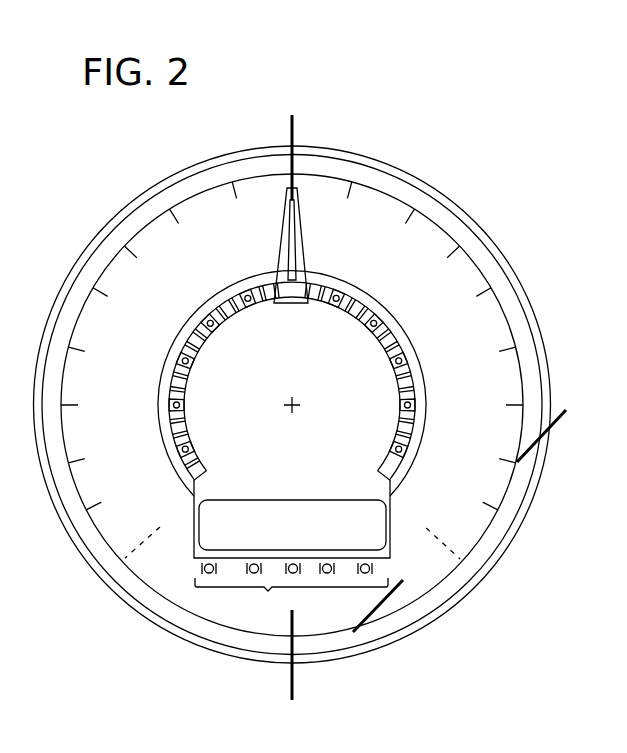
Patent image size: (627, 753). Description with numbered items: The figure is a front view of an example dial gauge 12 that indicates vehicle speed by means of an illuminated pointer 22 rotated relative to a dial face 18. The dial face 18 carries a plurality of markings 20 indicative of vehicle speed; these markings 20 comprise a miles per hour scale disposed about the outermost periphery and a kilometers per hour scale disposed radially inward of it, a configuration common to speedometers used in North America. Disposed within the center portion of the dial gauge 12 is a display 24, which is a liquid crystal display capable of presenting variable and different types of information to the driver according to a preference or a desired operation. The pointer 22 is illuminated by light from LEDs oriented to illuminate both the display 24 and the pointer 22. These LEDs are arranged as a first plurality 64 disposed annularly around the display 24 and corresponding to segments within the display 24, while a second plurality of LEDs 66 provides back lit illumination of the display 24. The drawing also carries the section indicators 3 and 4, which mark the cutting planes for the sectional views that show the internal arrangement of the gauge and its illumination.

The dial gauge 12 is at (430, 129).
The dial face 18 is at (382, 298).
The markings 20 is at (483, 320).
The pointer 22 is at (307, 222).
The display 24 is at (372, 415).
The first plurality of LEDs 64 is at (374, 481).
The second plurality of LEDs 66 is at (268, 592).
The section line 3- 3 is at (300, 123).
The section line 4- 4 is at (565, 428).